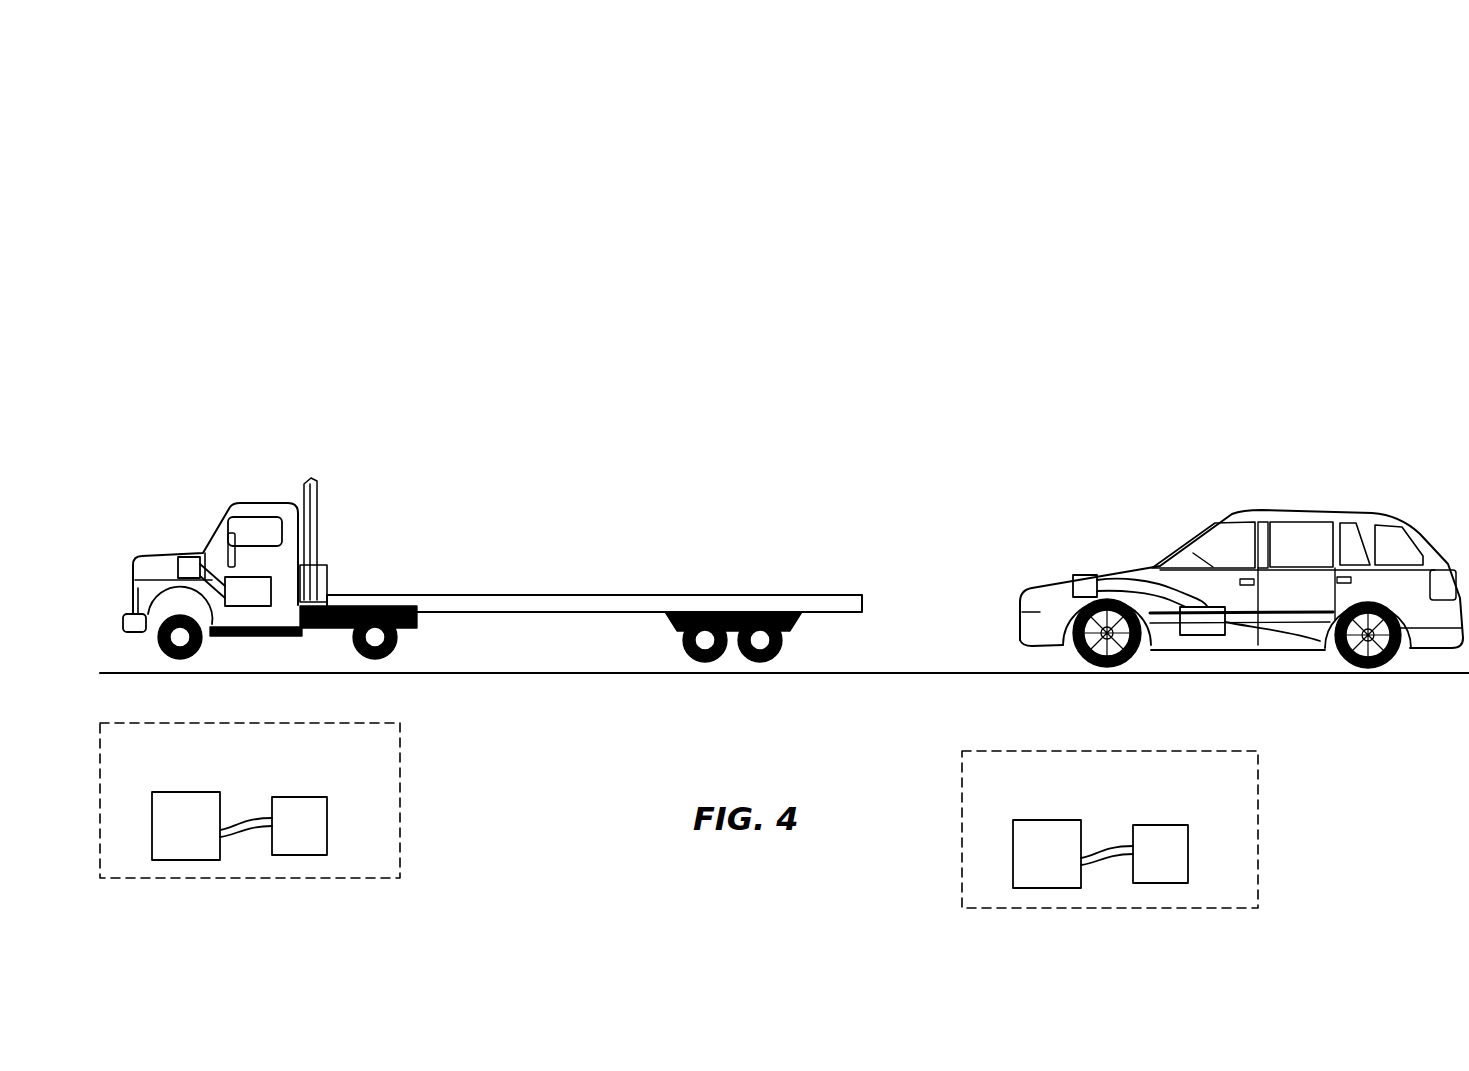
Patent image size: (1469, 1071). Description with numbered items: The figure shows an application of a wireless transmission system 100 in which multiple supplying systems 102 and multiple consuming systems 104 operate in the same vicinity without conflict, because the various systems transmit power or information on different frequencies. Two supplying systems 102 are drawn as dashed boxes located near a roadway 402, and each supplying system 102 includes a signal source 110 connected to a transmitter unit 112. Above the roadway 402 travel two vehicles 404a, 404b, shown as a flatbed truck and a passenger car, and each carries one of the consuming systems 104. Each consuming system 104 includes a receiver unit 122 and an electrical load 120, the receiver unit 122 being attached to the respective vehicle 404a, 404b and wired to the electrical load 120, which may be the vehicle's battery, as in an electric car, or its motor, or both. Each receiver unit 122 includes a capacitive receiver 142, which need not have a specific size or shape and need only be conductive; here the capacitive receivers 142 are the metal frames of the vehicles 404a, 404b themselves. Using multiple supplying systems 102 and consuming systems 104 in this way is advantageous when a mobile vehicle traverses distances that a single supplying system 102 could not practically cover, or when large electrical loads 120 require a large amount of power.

The wireless transmission system 100 is at (286, 220).
The supplying system 102 is at (380, 754).
The consuming system 104 is at (232, 420).
The signal source 110 is at (176, 792).
The transmitter unit 112 is at (299, 797).
The electrical load 120 is at (178, 556).
The receiver unit 122 is at (273, 588).
The capacitive receiver 142 is at (260, 608).
The roadway 402 is at (912, 676).
The vehicle 404a is at (289, 497).
The vehicle 404b is at (1294, 528).